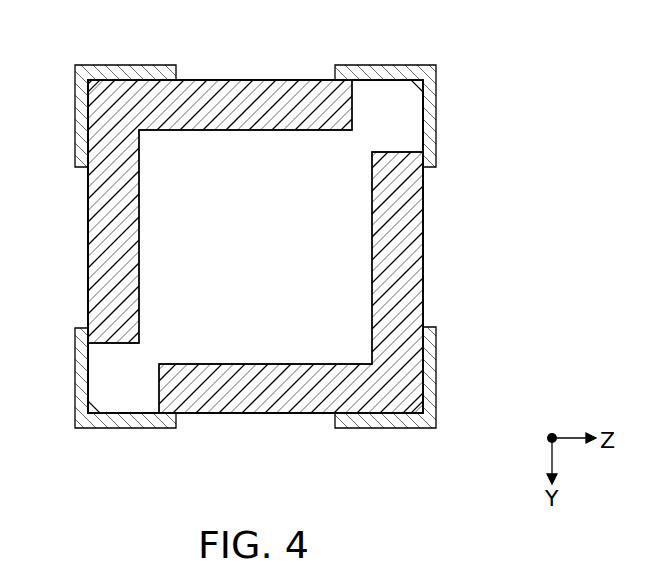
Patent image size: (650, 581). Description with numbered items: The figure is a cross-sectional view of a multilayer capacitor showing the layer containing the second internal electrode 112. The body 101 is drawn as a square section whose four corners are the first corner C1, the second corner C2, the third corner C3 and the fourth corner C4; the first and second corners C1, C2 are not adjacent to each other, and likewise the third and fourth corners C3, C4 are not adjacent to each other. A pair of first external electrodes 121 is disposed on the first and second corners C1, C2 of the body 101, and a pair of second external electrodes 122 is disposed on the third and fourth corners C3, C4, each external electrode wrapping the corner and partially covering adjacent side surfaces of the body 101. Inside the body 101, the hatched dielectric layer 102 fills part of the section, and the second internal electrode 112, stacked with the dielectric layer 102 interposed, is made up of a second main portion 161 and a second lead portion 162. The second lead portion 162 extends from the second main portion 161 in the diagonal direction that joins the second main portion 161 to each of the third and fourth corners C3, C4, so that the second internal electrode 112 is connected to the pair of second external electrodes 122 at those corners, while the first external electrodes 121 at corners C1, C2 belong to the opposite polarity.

The body 101 is at (295, 81).
The dielectric layer 102 is at (195, 84).
The second internal electrode 112 is at (330, 246).
The second main portion 161 is at (352, 207).
The second lead portion 162 is at (398, 130).
The first external electrode 121 is at (123, 69).
The second external electrode 122 is at (383, 69).
The first corner C1 is at (88, 80).
The second corner C2 is at (423, 413).
The third corner C3 is at (88, 413).
The fourth corner C4 is at (423, 80).